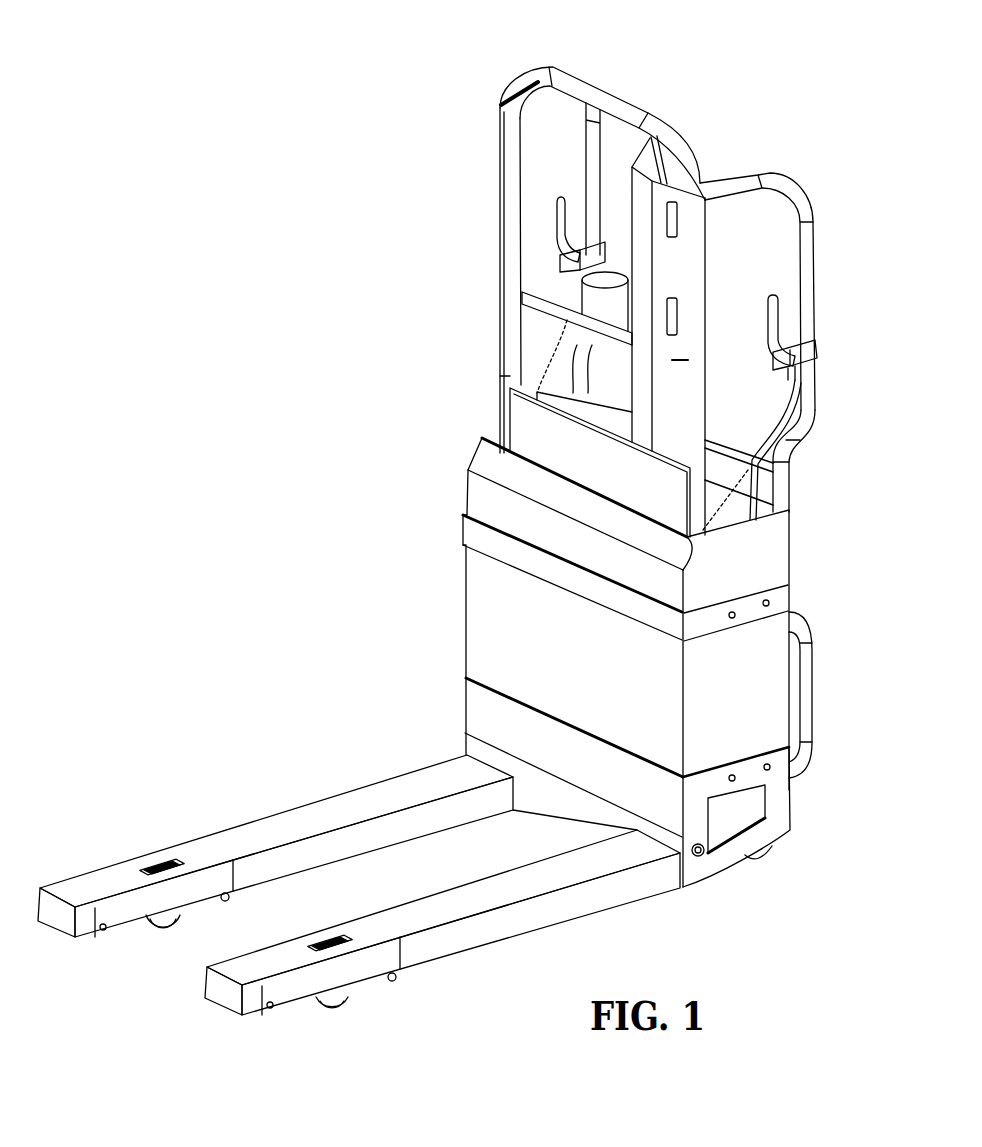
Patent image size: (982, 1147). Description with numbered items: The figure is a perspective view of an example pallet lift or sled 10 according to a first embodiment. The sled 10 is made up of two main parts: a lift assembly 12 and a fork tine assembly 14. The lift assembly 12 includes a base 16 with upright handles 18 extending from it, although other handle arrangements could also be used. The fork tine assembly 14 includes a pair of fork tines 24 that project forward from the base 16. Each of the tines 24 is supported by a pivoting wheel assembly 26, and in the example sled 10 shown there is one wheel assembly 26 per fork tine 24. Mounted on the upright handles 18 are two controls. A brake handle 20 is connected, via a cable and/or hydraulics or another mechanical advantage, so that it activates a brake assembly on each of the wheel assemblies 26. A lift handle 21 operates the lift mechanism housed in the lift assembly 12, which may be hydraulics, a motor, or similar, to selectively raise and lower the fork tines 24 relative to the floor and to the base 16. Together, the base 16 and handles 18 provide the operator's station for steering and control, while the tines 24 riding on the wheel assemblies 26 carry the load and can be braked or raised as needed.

The pallet lift or sled 10 is at (365, 360).
The lift assembly 12 is at (505, 87).
The fork tine assembly 14 is at (463, 725).
The base 16 is at (792, 602).
The upright handles 18 is at (603, 140).
The brake handle 20 is at (558, 222).
The lift handle 21 is at (778, 323).
The fork tines 24 is at (433, 895).
The pivoting wheel assembly 26 is at (167, 922).